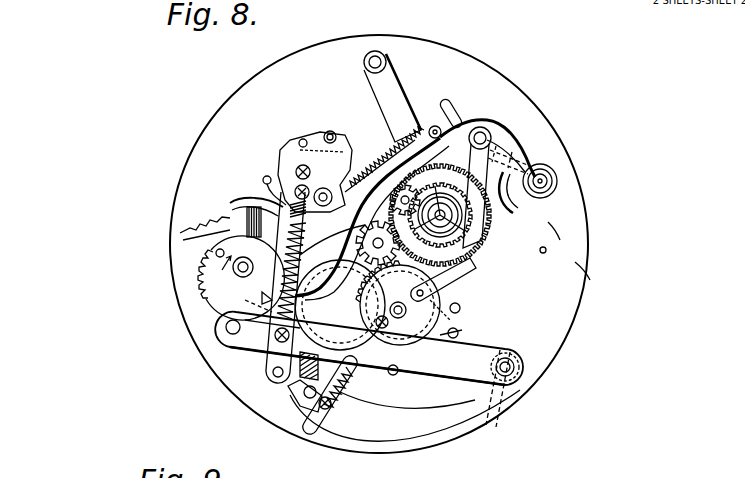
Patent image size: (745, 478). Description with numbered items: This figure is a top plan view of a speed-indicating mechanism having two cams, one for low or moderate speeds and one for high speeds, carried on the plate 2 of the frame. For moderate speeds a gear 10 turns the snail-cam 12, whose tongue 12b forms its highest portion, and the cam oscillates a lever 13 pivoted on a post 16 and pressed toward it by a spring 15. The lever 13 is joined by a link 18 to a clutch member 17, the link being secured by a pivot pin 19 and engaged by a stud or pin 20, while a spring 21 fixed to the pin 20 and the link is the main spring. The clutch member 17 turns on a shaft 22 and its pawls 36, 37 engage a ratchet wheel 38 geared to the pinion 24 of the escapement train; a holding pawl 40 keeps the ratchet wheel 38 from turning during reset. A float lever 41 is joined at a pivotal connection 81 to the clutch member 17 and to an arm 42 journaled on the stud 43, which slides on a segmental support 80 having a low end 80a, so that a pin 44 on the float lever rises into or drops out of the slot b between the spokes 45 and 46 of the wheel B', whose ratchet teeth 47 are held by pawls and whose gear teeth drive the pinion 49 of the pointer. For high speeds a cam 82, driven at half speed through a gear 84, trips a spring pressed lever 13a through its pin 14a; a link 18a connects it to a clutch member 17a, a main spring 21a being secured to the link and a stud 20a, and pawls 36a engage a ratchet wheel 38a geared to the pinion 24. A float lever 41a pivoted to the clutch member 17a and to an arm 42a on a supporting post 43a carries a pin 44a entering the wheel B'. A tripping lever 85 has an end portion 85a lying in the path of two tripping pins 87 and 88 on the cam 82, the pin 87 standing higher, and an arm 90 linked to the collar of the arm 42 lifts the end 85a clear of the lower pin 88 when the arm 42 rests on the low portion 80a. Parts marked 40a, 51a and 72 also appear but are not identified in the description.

The plate 2 is at (200, 152).
The gear 10 is at (278, 378).
The snail-cam 12 is at (335, 300).
The tongue 12b is at (285, 403).
The lever 13 is at (398, 432).
The spring pressed lever 13a is at (233, 331).
The pin 14a is at (233, 335).
The spring 15 is at (495, 395).
The post 16 is at (518, 372).
The clutch member 17 is at (458, 308).
The clutch member 17a is at (338, 130).
The link 18 is at (387, 316).
The link 18a is at (217, 224).
The pivot pin 19 is at (395, 312).
The stud or pin 20 is at (330, 413).
The stud 20a is at (270, 357).
The spring 21 is at (350, 397).
The main spring 21a is at (207, 223).
The shaft or spindle 22 is at (408, 303).
The pinion 24 is at (280, 143).
The pawl 36 is at (455, 321).
The pawls 36a is at (320, 130).
The pawl 37 is at (462, 333).
The ratchet wheel 38 is at (445, 285).
The ratchet wheel 38a is at (283, 163).
The holding pawl 40 is at (397, 374).
The pin 40a is at (263, 181).
The float lever 41 is at (529, 160).
The float lever 41a is at (338, 170).
The arm or crank 42 is at (532, 167).
The arm 42a is at (397, 83).
The stud 43 is at (558, 183).
The supporting post 43a is at (378, 50).
The pin 44 is at (560, 235).
The curved arm 44a is at (427, 167).
The spoke 45 is at (452, 168).
The spoke 46 is at (472, 262).
The ratchet teeth 47 is at (480, 240).
The pinion 49 is at (220, 200).
The pin 51a is at (436, 126).
The ratchet ring 72 is at (442, 195).
The segmental support 80 is at (545, 198).
The low end of segmental support 80a is at (512, 214).
The pivotal connection 81 is at (460, 298).
The cam 82 is at (203, 285).
The gear 84 is at (233, 210).
The tripping lever 85 is at (442, 117).
The end portion of tripping lever 85a is at (233, 300).
The tripping pin 87 is at (216, 253).
The tripping pin 88 is at (246, 295).
The arm 90 is at (505, 120).
The slot b is at (546, 250).
The wheel B' is at (623, 264).